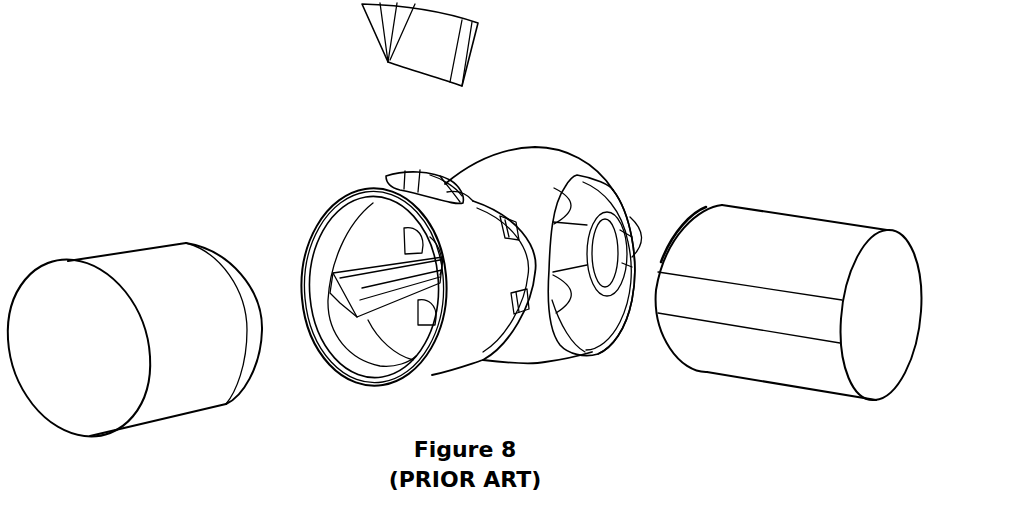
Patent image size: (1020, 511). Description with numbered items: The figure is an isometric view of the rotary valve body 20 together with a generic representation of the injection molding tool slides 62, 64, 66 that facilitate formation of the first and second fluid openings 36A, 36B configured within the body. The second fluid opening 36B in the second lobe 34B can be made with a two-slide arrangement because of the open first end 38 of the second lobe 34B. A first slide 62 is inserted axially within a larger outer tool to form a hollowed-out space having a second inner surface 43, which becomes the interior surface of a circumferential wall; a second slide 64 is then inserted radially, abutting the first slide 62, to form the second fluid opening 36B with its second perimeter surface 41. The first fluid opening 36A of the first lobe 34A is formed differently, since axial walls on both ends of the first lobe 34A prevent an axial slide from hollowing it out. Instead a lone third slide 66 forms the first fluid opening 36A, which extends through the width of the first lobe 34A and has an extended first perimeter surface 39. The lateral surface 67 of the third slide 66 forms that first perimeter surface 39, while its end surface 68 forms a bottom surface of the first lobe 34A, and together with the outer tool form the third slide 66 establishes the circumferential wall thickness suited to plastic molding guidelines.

The rotary valve body 20 is at (506, 147).
The first lobe 34A is at (533, 158).
The second lobe 34B is at (480, 355).
The first fluid opening 36A is at (585, 175).
The second fluid opening 36B is at (396, 182).
The open first end 38 is at (320, 218).
The first perimeter surface 39 is at (583, 323).
The second perimeter surface 41 is at (440, 180).
The second inner surface 43 is at (330, 245).
The first slide 62 is at (125, 267).
The second slide 64 is at (373, 38).
The third slide 66 is at (908, 236).
The lateral surface 67 is at (808, 230).
The end surface 68 is at (698, 212).